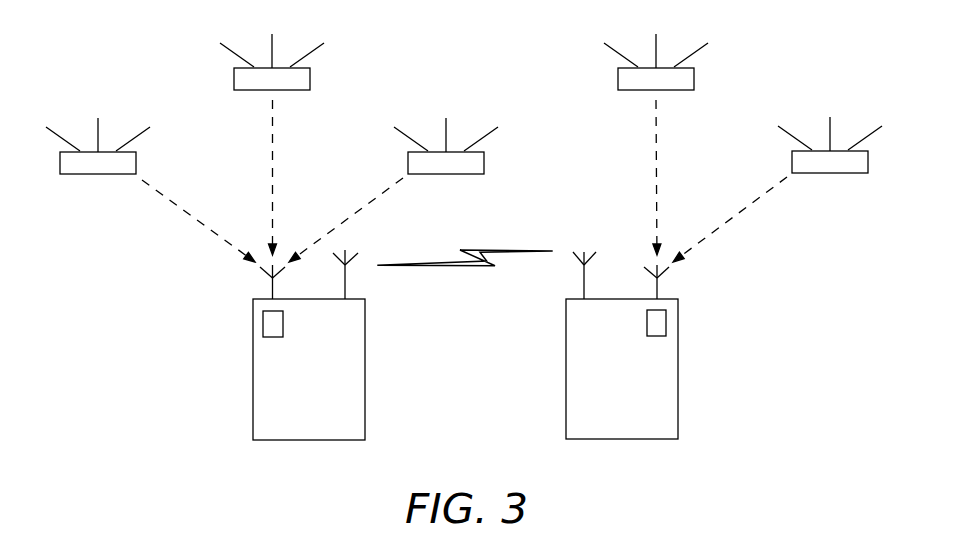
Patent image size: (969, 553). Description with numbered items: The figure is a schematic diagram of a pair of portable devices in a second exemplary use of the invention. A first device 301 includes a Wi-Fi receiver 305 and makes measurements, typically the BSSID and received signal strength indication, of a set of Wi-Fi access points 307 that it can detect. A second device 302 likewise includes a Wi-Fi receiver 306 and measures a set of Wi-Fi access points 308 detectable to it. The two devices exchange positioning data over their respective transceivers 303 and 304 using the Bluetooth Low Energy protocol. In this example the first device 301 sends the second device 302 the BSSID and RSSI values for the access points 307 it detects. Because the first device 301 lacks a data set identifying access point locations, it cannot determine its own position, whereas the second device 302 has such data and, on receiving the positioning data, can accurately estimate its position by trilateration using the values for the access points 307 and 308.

The device 301 is at (365, 377).
The device 302 is at (566, 377).
The transceiver 303 is at (348, 278).
The transceiver 304 is at (582, 278).
The Wi-Fi receiver 305 is at (263, 321).
The Wi-Fi receiver 306 is at (666, 320).
The Wi-Fi access points 307 is at (253, 91).
The Wi-Fi access points 308 is at (627, 91).